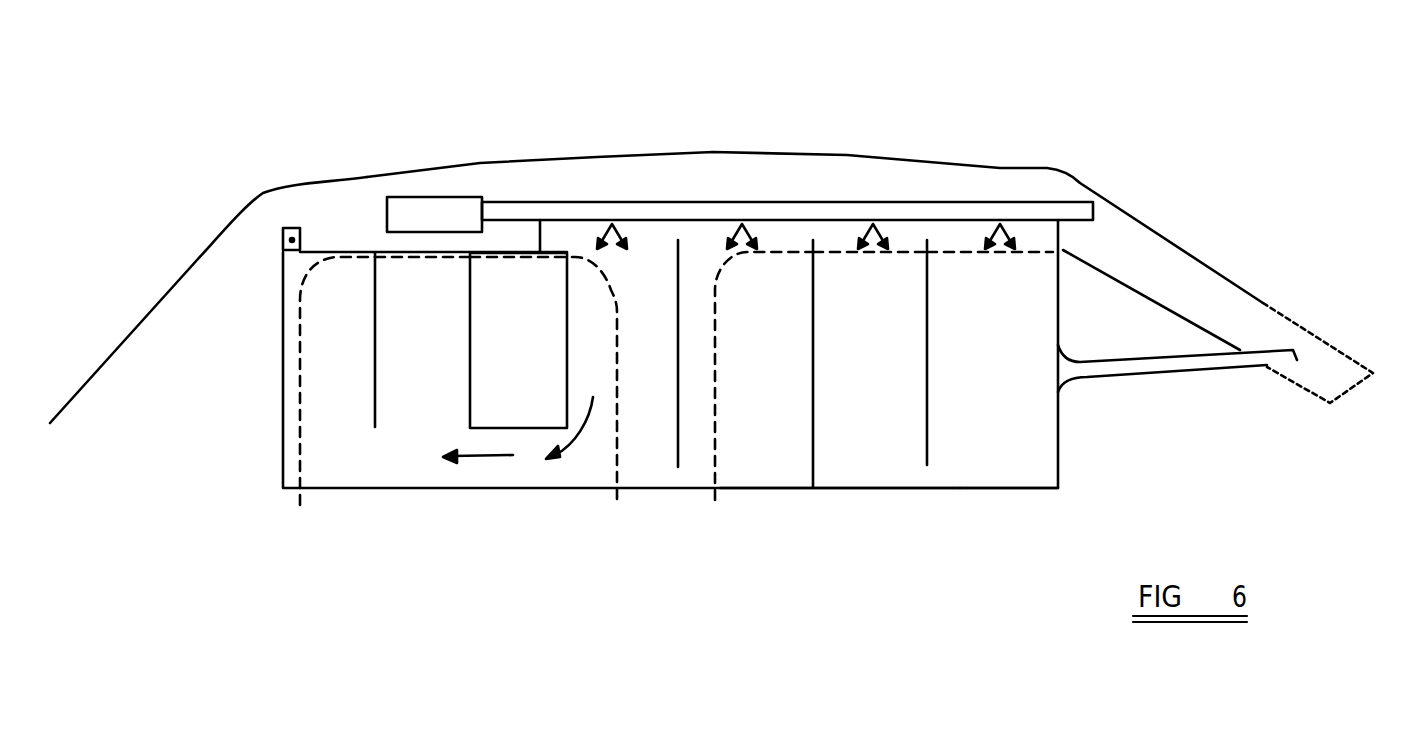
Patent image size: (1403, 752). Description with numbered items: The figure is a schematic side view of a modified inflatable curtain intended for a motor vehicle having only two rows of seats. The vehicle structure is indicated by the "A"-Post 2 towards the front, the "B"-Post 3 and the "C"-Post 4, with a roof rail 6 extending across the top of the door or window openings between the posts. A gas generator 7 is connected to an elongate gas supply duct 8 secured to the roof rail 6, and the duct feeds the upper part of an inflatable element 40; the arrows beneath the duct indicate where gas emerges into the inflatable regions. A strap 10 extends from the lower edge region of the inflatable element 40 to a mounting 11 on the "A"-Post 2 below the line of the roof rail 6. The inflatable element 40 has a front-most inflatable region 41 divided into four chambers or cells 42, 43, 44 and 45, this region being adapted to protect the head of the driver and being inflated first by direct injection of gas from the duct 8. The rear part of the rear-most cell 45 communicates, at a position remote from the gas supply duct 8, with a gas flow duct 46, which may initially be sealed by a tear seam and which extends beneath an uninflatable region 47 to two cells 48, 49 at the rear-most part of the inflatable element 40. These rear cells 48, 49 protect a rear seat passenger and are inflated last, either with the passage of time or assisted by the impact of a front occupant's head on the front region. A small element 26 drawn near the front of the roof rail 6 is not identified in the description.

The "A"-Post 2 is at (1190, 273).
The "B"-Post 3 is at (655, 275).
The "C"-Post 4 is at (265, 350).
The roof rail 6 is at (360, 213).
The gas generator 7 is at (460, 200).
The gas supply duct 8 is at (617, 200).
The strap 10 is at (877, 217).
The mounting 11 is at (1287, 350).
The fastening element 26 is at (297, 228).
The inflatable element 40 is at (983, 488).
The front-most inflatable region 41 is at (833, 508).
The chamber or cell 42 is at (1018, 338).
The chamber or cell 43 is at (892, 338).
The chamber or cell 44 is at (793, 338).
The rear-most cell 45 is at (676, 338).
The gas flow duct 46 is at (527, 453).
The uninflatable region 47 is at (551, 338).
The cell 48 is at (453, 338).
The cell 49 is at (371, 338).